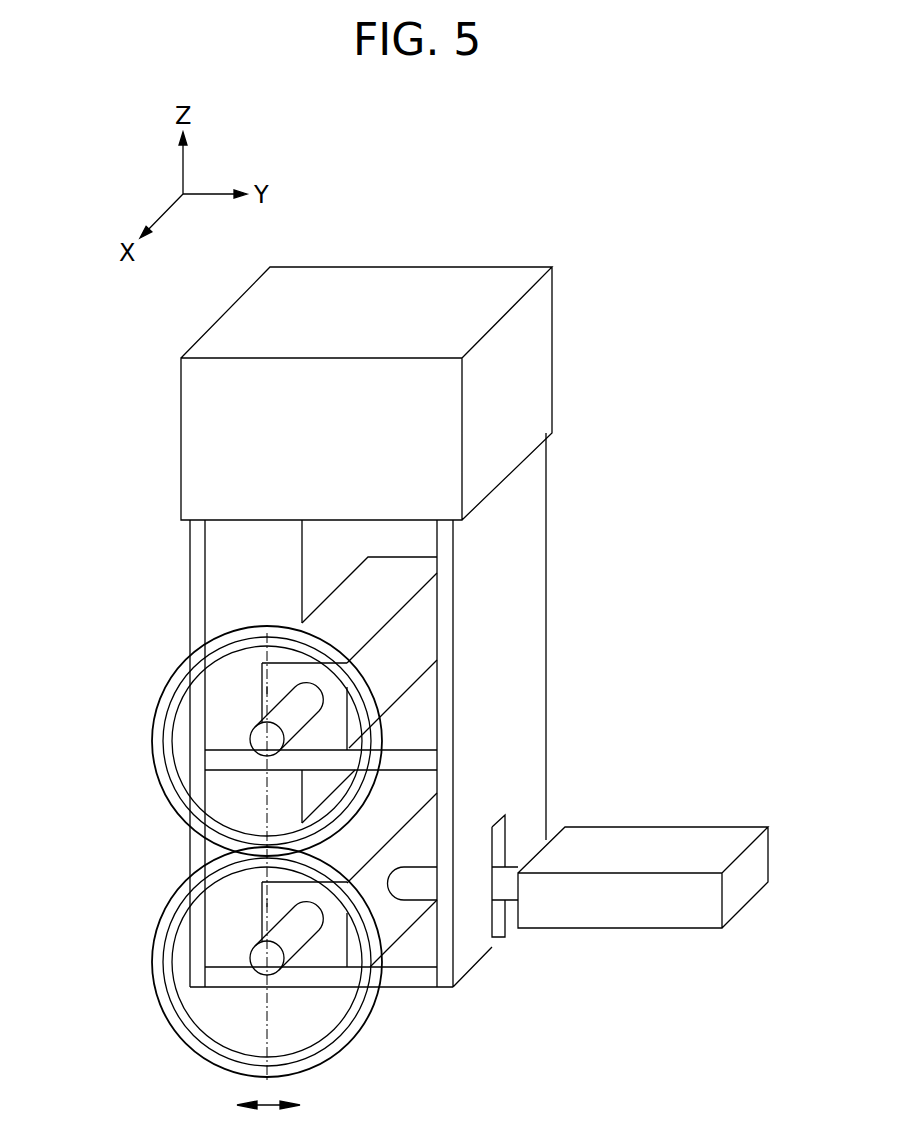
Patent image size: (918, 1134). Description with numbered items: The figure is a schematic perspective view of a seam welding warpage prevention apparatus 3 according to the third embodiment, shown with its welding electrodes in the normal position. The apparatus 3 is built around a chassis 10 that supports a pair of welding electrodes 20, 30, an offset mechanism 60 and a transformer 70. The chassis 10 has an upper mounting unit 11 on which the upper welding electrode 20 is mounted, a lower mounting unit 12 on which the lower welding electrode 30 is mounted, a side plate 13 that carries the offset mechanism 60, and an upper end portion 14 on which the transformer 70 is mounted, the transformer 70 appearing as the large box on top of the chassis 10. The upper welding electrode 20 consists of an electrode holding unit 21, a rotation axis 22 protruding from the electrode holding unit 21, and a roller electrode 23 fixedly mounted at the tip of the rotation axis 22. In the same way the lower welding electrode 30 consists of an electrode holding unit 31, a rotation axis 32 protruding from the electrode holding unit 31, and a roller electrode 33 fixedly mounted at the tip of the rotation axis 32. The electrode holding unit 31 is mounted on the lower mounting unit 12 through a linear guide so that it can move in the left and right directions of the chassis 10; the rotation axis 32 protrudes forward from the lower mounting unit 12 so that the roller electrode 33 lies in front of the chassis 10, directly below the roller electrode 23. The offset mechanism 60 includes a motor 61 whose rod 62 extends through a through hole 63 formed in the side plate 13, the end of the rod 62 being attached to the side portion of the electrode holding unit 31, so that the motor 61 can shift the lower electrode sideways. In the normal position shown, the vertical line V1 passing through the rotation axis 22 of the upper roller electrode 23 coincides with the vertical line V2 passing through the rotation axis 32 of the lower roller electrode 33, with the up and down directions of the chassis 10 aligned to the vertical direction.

The seam welding warpage prevention apparatus 3 is at (490, 203).
The chassis 10 is at (549, 517).
The upper mounting unit 11 is at (253, 732).
The lower mounting unit 12 is at (253, 951).
The side plate 13 is at (541, 607).
The upper end portion 14 is at (196, 536).
The upper welding electrode 20 is at (94, 600).
The electrode holding unit 21 is at (203, 647).
The rotation axis 22 is at (260, 670).
The roller electrode 23 is at (167, 702).
The lower welding electrode 30 is at (94, 818).
The electrode holding unit 31 is at (203, 867).
The rotation axis 32 is at (260, 890).
The roller electrode 33 is at (167, 917).
The offset mechanism 60 is at (648, 695).
The motor 61 is at (590, 843).
The rod 62 is at (412, 884).
The through hole 63 is at (507, 829).
The transformer 70 is at (541, 360).
The vertical line V1 is at (268, 690).
The vertical line V2 is at (268, 903).